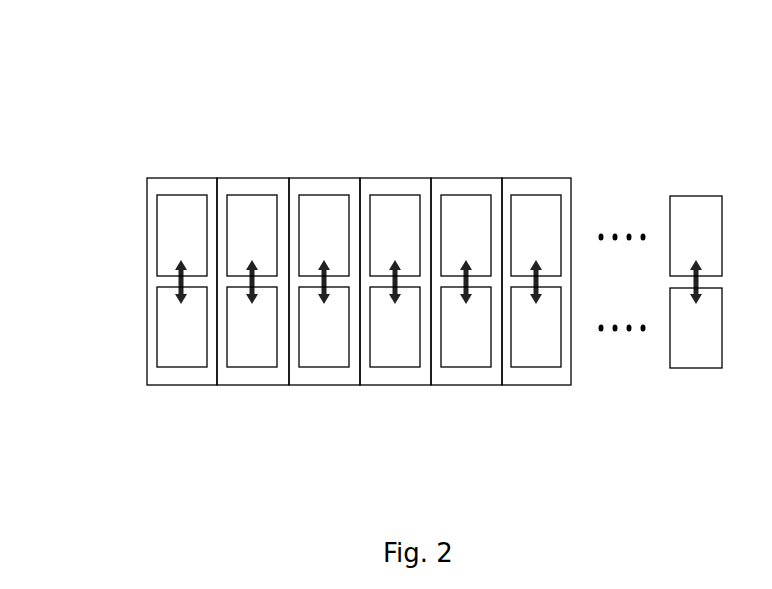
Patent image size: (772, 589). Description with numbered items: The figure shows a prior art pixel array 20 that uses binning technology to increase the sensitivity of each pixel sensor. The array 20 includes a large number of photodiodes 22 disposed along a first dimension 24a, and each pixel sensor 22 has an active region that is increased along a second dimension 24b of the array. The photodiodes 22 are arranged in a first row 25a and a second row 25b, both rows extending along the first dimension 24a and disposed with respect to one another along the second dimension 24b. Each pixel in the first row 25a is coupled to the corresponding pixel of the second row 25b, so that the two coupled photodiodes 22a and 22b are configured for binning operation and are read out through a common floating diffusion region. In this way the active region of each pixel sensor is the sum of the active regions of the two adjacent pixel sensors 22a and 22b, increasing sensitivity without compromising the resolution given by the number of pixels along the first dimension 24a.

The pixel array 20 is at (405, 102).
The photodiode 22 is at (268, 188).
The coupled photodiode of the first row 22a is at (180, 225).
The coupled photodiode of the second row 22b is at (177, 358).
The first dimension 24a is at (317, 89).
The second dimension 24b is at (69, 243).
The first row 25a is at (548, 223).
The second row 25b is at (542, 348).